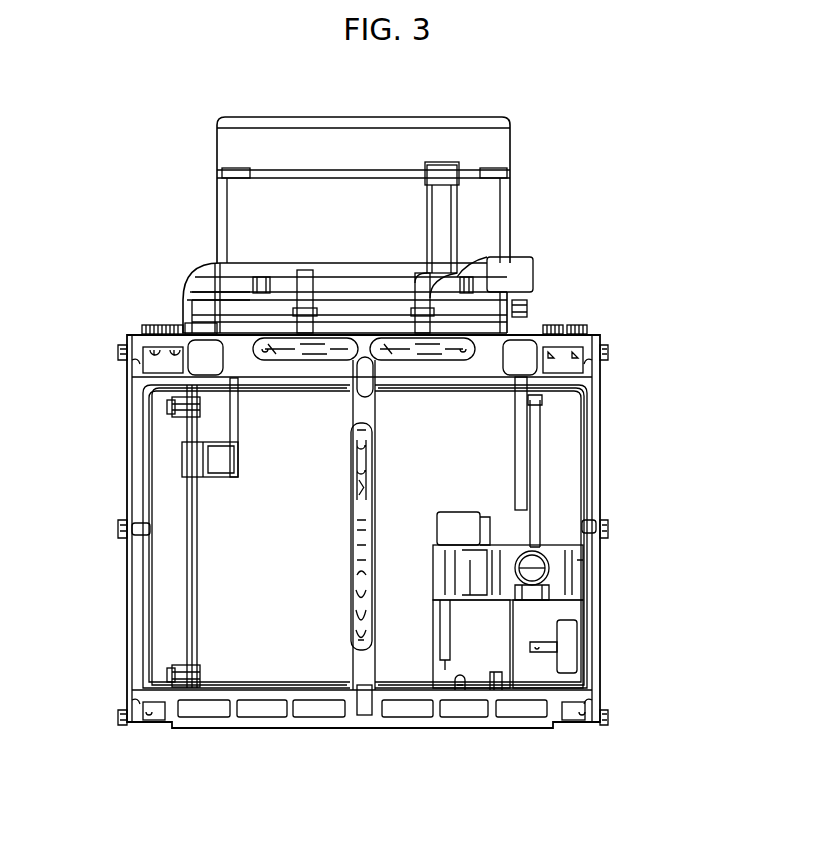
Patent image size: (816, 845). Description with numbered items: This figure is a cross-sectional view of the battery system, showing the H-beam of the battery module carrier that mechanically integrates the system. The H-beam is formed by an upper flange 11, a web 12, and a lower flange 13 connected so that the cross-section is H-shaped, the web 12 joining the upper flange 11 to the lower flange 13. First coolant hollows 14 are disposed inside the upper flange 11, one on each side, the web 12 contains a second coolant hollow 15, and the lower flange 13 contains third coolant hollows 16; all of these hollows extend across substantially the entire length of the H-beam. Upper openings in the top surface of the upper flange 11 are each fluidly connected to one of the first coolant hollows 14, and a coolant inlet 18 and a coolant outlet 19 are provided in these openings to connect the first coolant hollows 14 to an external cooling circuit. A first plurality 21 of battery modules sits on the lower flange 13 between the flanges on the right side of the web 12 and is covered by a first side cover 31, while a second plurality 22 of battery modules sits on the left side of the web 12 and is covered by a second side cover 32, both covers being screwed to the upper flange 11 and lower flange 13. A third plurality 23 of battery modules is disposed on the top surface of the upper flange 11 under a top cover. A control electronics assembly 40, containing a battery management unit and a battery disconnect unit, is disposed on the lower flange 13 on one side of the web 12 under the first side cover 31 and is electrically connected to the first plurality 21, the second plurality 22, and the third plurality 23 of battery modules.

The upper flange 11 is at (135, 345).
The web 12 is at (367, 408).
The lower flange 13 is at (350, 713).
The first coolant hollows 14 is at (200, 350).
The second coolant hollow 15 is at (362, 447).
The third coolant hollows 16 is at (472, 707).
The coolant inlet 18 is at (303, 292).
The coolant outlet 19 is at (422, 273).
The first plurality of battery modules 21 is at (434, 472).
The second plurality of battery modules 22 is at (244, 544).
The third plurality of battery modules 23 is at (310, 232).
The first side cover 31 is at (602, 487).
The second side cover 32 is at (127, 575).
The control electronics assembly 40 is at (583, 573).